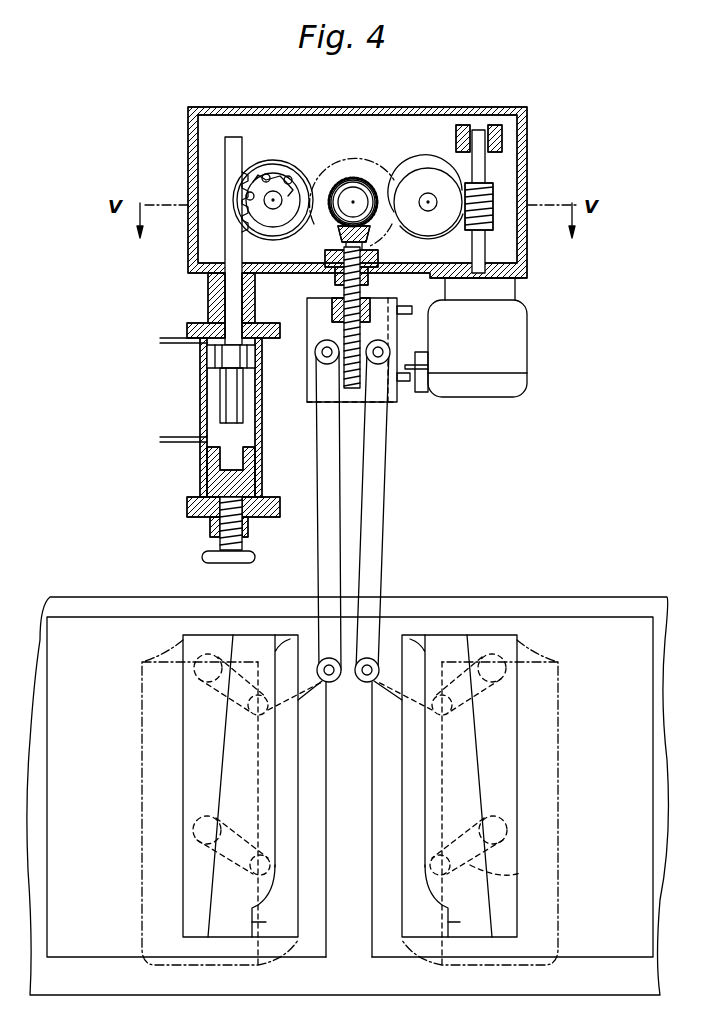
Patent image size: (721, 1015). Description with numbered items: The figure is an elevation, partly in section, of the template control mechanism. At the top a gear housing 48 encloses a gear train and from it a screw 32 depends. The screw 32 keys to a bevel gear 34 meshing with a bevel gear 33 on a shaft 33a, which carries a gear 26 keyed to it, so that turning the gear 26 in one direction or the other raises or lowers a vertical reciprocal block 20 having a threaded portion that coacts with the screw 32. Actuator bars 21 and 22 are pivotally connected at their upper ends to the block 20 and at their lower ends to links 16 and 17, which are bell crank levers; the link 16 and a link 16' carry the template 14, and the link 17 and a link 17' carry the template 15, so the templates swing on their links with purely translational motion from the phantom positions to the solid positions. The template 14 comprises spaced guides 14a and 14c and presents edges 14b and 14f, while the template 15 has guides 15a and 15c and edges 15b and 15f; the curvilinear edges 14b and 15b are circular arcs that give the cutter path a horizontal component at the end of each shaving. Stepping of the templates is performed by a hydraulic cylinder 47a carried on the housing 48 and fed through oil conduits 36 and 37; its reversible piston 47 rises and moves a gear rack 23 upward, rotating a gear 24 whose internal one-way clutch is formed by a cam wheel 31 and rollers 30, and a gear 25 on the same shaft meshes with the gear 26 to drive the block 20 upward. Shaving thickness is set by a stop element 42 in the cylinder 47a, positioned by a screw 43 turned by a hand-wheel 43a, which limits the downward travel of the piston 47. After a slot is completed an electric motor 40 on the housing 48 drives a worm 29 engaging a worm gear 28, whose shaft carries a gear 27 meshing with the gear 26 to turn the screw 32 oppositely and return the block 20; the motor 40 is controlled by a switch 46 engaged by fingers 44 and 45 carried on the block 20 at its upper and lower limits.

The template 14 is at (445, 647).
The template edge 14a is at (415, 648).
The curvilinear edge 14b is at (440, 897).
The template edge 14c is at (510, 648).
The template edge 14f is at (467, 923).
The template 15 is at (243, 647).
The template edge 15a is at (285, 648).
The curvilinear edge 15b is at (268, 898).
The template edge 15c is at (180, 635).
The template edge 15f is at (270, 923).
The link 16 is at (442, 693).
The link 16' is at (486, 850).
The link 17 is at (258, 691).
The link 17' is at (229, 848).
The reciprocal block 20 is at (314, 309).
The actuator bar 21 is at (372, 526).
The actuator bar 22 is at (332, 530).
The gear rack 23 is at (230, 185).
The gear 24 is at (250, 167).
The gear 25 is at (300, 172).
The gear 26 is at (336, 163).
The gear 27 is at (418, 168).
The worm gear 28 is at (440, 168).
The worm 29 is at (490, 190).
The rollers 30 is at (282, 182).
The cam wheel 31 is at (262, 182).
The screw 32 is at (345, 330).
The bevel gear 33 is at (360, 182).
The shaft 33a is at (356, 196).
The bevel gear 34 is at (333, 242).
The oil conduit 36 is at (190, 341).
The oil conduit 37 is at (190, 441).
The electric motor 40 is at (510, 338).
The stop element 42 is at (205, 462).
The screw 43 is at (215, 528).
The hand-wheel 43a is at (201, 570).
The finger 44 is at (405, 308).
The finger 45 is at (410, 378).
The switch 46 is at (421, 390).
The piston 47 is at (205, 356).
The hydraulic cylinder 47a is at (200, 402).
The gear housing 48 is at (190, 250).